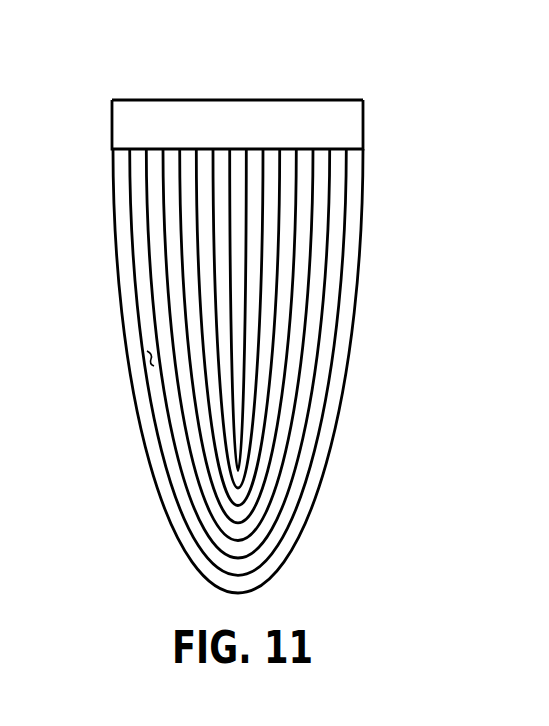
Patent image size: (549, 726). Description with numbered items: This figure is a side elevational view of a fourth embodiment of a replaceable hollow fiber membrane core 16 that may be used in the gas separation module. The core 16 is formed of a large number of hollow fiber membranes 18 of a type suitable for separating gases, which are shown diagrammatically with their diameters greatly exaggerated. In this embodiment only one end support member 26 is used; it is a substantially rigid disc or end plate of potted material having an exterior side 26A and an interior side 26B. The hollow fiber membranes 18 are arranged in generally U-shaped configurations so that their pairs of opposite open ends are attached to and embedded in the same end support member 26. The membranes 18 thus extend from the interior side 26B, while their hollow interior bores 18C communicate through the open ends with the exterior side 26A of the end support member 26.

The hollow fiber membrane core 16 is at (100, 120).
The end support member 26 is at (364, 119).
The exterior side of end support member 26A is at (244, 100).
The interior side of end support member 26B is at (153, 152).
The hollow fiber membranes 18 is at (177, 488).
The hollow interior bores 18C is at (148, 362).